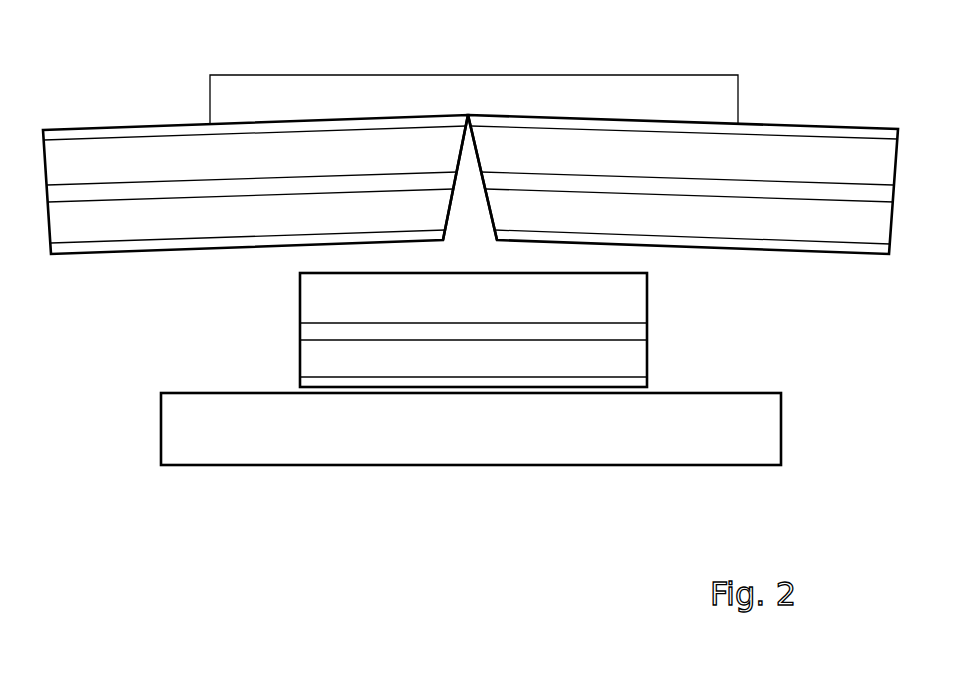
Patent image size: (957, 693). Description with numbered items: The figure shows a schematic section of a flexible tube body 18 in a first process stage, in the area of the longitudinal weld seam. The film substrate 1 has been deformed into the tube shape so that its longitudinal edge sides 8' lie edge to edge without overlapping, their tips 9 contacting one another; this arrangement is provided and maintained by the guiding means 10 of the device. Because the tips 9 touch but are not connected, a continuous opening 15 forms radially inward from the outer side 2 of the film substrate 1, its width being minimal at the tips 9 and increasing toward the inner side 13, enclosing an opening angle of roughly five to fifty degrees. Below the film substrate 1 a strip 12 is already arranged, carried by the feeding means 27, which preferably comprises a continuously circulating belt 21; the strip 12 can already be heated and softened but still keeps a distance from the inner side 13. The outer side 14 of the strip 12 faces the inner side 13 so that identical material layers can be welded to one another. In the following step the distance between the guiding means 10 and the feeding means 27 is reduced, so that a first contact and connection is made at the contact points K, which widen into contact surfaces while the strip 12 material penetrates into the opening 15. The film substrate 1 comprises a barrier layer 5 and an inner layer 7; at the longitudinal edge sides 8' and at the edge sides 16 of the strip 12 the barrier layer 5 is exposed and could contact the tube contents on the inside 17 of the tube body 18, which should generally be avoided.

The film substrate 1 is at (83, 274).
The outer side 2 is at (145, 124).
The barrier layer 5 is at (193, 190).
The inner layer 7 is at (118, 247).
The longitudinal edge sides 8' is at (456, 101).
The tips 9 is at (470, 118).
The guiding means 10 is at (428, 93).
The strip 12 is at (696, 329).
The inner side 13 is at (197, 250).
The outer side of strip 14 is at (442, 273).
The opening 15 is at (473, 193).
The edge sides of strip 16 is at (300, 320).
The inside 17 is at (366, 539).
The tube body 18 is at (532, 564).
The continuously circulating belt 21 is at (794, 443).
The feeding means 27 is at (168, 402).
The contact points K is at (297, 245).